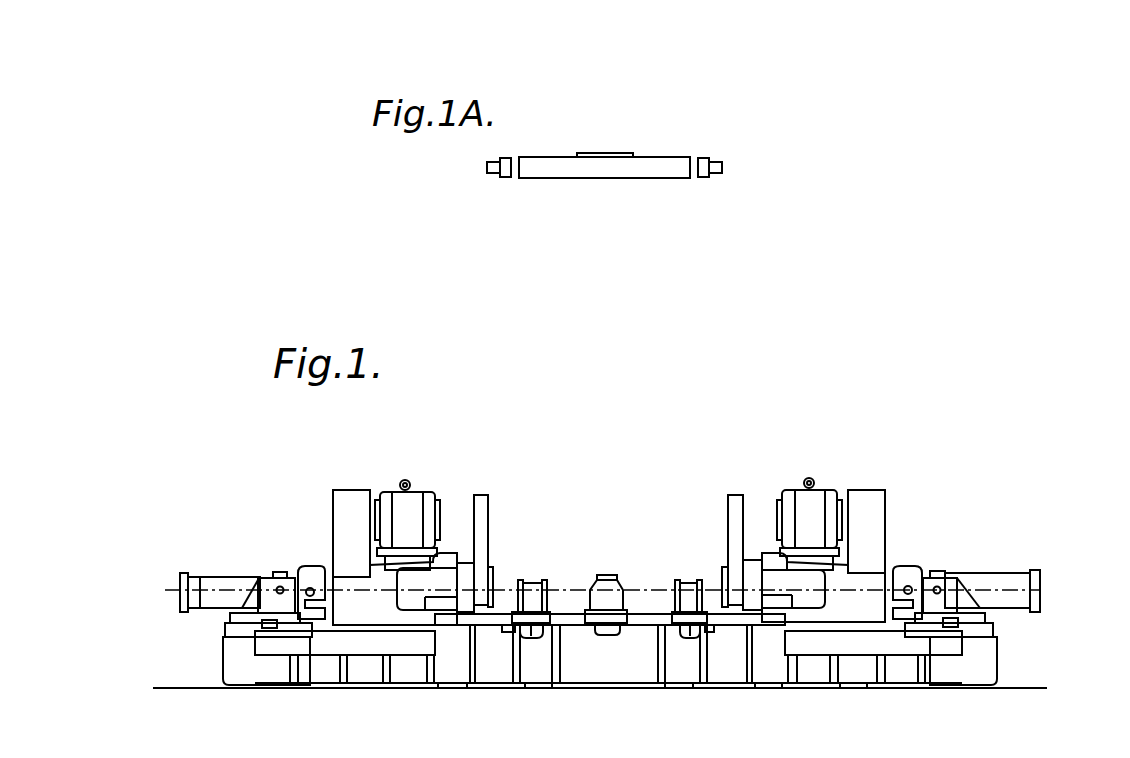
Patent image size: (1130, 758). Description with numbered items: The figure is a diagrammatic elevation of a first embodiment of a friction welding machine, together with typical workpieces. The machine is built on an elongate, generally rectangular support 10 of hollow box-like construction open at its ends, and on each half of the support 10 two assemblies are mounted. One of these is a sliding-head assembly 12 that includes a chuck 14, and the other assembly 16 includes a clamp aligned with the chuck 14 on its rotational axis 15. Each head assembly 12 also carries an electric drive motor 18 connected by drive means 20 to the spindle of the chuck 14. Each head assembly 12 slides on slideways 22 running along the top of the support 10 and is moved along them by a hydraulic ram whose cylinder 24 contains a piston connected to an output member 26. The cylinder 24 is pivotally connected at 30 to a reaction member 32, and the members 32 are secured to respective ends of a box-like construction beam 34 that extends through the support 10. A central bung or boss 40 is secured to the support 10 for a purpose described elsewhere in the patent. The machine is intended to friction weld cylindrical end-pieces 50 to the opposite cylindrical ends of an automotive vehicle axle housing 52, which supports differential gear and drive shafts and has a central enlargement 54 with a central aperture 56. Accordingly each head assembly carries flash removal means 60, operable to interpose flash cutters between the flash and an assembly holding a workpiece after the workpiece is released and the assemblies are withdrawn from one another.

In FIG. 1, the support 10 is at (500, 670).
In FIG. 1, the sliding-head assembly 12 is at (367, 483).
In FIG. 1, the chuck 14 is at (488, 594).
In FIG. 1, the rotational axis 15 is at (203, 576).
In FIG. 1, the clamp assembly 16 is at (563, 612).
In FIG. 1, the electric drive motor 18 is at (413, 502).
In FIG. 1, the drive means 20 is at (331, 513).
In FIG. 1, the slideways 22 is at (570, 612).
In FIG. 1, the cylinder 24 is at (195, 576).
In FIG. 1, the output member 26 is at (307, 568).
In FIG. 1, the pivotal connection 30 is at (276, 590).
In FIG. 1, the reaction member 32 is at (253, 611).
In FIG. 1, the box-like construction beam 34 is at (232, 660).
In FIG. 1, the central bung or boss 40 is at (608, 577).
In FIG. 1A, the cylindrical end-pieces 50 is at (500, 179).
In FIG. 1A, the axle housing 52 is at (613, 181).
In FIG. 1A, the central enlargement 54 is at (633, 154).
In FIG. 1A, the central aperture 56 is at (609, 147).
In FIG. 1, the flash removal means 60 is at (498, 559).